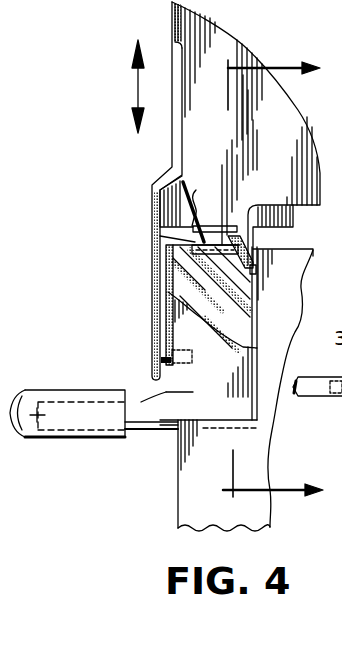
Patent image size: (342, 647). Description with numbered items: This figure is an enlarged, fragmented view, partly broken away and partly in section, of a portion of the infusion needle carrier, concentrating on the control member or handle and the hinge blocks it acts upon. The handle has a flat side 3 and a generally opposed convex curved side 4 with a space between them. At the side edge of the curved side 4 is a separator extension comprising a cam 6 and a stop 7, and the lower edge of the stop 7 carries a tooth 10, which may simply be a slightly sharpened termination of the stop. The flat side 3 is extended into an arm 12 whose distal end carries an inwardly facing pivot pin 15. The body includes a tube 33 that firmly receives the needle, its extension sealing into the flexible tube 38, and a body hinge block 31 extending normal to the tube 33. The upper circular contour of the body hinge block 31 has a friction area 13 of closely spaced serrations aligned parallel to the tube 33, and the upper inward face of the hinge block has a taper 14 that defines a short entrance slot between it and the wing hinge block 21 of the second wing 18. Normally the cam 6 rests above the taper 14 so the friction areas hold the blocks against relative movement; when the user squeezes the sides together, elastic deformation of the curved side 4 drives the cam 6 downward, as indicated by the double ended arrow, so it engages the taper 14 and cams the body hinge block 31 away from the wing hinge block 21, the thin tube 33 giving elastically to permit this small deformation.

The flat side 3 is at (172, 107).
The curved side 4 is at (183, 28).
The cam 6 is at (242, 255).
The stop 7 is at (198, 198).
The tooth 10 is at (162, 231).
The arm 12 is at (152, 293).
The friction area 13 is at (200, 245).
The taper 14 is at (257, 250).
The pivot pin 15 is at (165, 361).
The second wing 18 is at (186, 468).
The wing hinge block 21 is at (286, 330).
The body hinge block 31 is at (166, 392).
The tube 33 is at (141, 430).
The flexible tube 38 is at (84, 434).